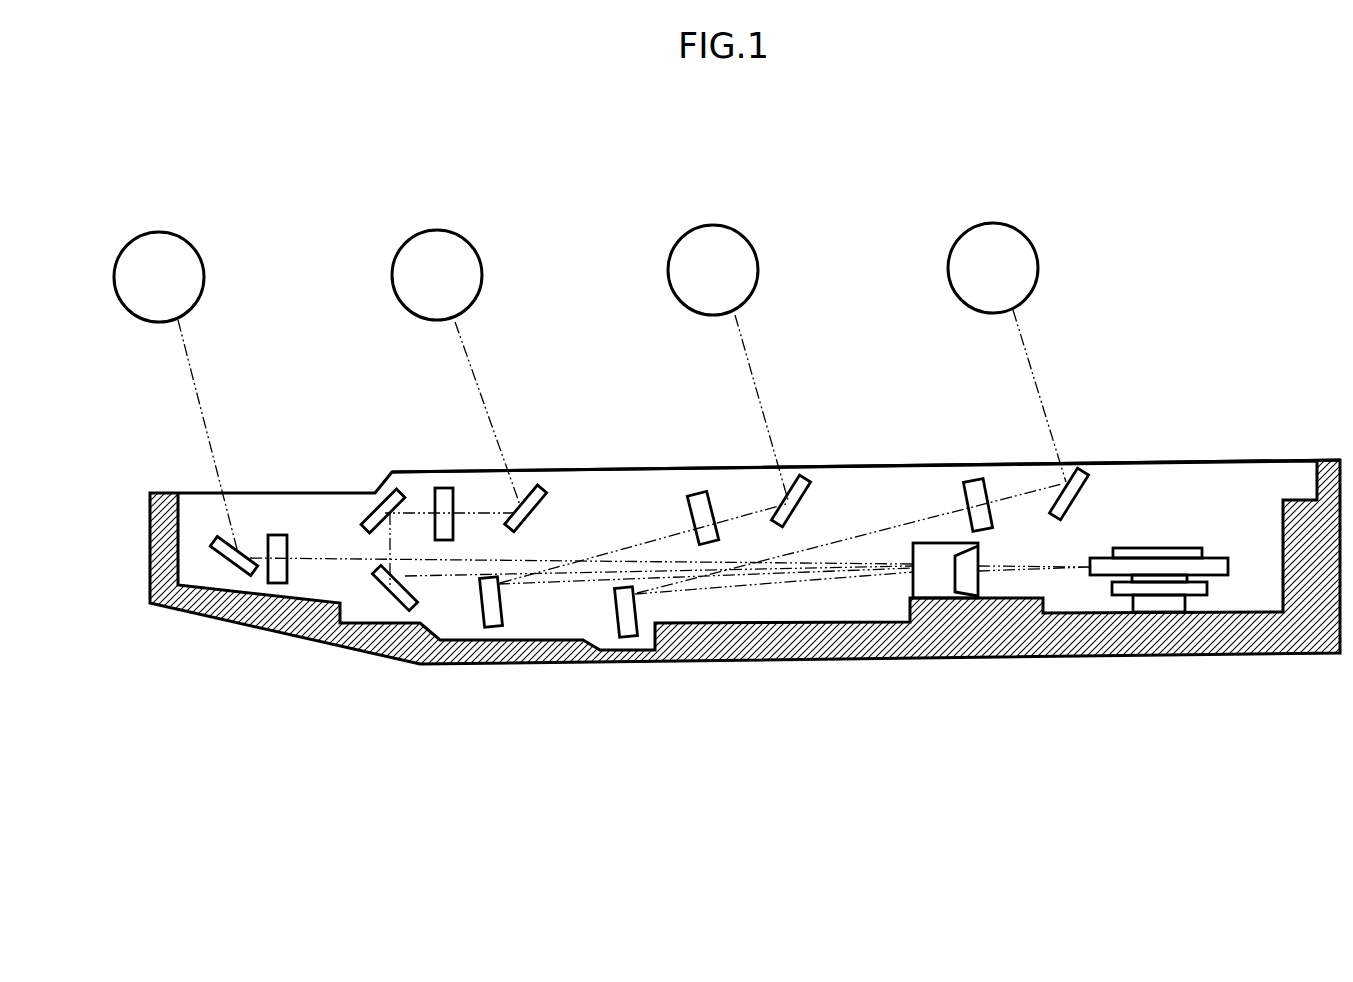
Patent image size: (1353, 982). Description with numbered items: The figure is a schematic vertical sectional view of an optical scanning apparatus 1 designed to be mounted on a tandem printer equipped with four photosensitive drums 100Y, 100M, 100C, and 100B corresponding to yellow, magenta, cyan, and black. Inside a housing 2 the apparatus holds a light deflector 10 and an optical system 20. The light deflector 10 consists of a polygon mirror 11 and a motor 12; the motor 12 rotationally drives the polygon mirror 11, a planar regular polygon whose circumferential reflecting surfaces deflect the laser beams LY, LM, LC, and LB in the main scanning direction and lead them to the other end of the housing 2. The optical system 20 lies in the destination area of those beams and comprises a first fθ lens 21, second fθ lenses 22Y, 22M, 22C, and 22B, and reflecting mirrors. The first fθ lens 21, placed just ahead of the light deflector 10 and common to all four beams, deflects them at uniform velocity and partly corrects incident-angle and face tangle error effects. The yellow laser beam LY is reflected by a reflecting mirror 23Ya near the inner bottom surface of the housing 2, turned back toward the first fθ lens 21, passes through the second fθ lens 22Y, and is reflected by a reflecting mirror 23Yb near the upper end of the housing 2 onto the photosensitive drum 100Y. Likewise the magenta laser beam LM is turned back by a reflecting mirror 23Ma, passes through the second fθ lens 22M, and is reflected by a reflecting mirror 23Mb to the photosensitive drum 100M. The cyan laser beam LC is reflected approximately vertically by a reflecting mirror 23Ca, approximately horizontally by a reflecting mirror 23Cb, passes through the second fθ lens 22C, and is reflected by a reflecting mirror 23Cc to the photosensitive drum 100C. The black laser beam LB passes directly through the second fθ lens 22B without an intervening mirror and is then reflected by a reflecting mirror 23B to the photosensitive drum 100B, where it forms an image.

The optical scanning apparatus 1 is at (1189, 347).
The housing 2 is at (848, 665).
The light deflector 10 is at (1161, 563).
The polygon mirror 11 is at (1220, 557).
The motor 12 is at (1158, 612).
The optical system 20 is at (883, 489).
The first fθ lens 21 is at (925, 543).
The second fθ lens 22B is at (276, 535).
The second fθ lens 22C is at (444, 488).
The second fθ lens 22M is at (695, 493).
The second fθ lens 22Y is at (972, 480).
The reflecting mirror 23B is at (240, 573).
The reflecting mirror 23Ca is at (382, 608).
The reflecting mirror 23Cb is at (380, 494).
The reflecting mirror 23Cc is at (538, 488).
The reflecting mirror 23Ma is at (494, 631).
The reflecting mirror 23Mb is at (803, 477).
The reflecting mirror 23Ya is at (628, 641).
The reflecting mirror 23Yb is at (1080, 468).
The photosensitive drum 100B is at (160, 232).
The photosensitive drum 100C is at (437, 230).
The photosensitive drum 100M is at (715, 225).
The photosensitive drum 100Y is at (997, 222).
The laser beam LB is at (320, 556).
The laser beam LC is at (452, 574).
The laser beam LM is at (562, 580).
The laser beam LY is at (740, 588).